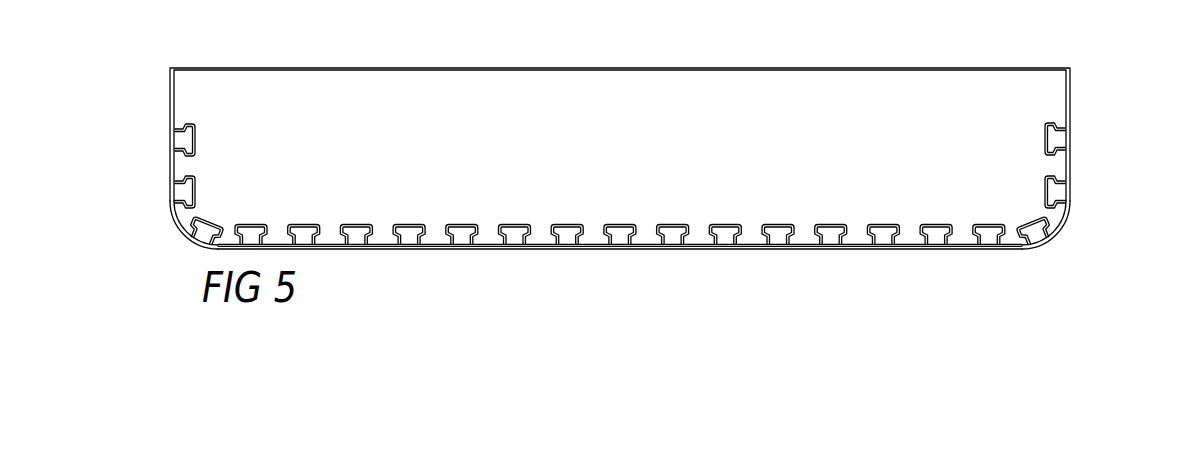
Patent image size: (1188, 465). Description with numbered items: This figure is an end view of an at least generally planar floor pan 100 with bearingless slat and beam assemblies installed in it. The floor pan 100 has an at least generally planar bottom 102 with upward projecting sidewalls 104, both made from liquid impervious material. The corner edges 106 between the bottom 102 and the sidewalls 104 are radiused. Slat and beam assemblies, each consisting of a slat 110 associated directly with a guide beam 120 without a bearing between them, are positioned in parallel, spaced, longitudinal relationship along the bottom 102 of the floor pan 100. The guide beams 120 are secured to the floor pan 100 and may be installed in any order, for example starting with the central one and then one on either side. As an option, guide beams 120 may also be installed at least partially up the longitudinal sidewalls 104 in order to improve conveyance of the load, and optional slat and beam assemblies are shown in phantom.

The planar floor pan 100 is at (619, 152).
The bottom 102 is at (645, 250).
The sidewalls 104 is at (172, 142).
The corner edges 106 is at (177, 229).
The slat 110 is at (518, 222).
The guide beam 120 is at (1028, 217).